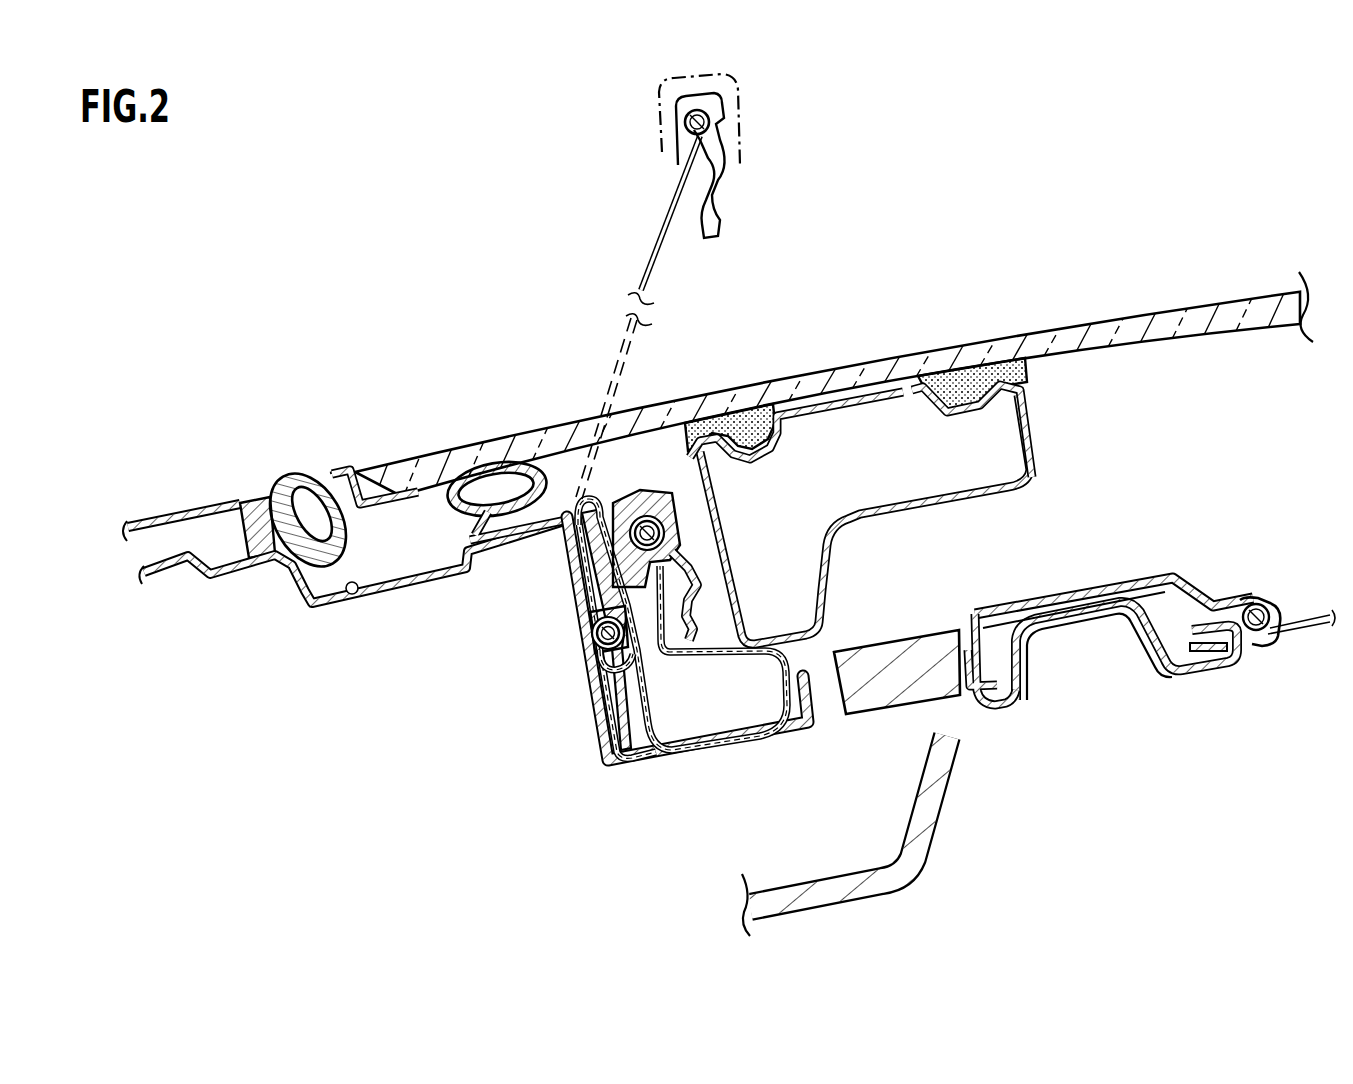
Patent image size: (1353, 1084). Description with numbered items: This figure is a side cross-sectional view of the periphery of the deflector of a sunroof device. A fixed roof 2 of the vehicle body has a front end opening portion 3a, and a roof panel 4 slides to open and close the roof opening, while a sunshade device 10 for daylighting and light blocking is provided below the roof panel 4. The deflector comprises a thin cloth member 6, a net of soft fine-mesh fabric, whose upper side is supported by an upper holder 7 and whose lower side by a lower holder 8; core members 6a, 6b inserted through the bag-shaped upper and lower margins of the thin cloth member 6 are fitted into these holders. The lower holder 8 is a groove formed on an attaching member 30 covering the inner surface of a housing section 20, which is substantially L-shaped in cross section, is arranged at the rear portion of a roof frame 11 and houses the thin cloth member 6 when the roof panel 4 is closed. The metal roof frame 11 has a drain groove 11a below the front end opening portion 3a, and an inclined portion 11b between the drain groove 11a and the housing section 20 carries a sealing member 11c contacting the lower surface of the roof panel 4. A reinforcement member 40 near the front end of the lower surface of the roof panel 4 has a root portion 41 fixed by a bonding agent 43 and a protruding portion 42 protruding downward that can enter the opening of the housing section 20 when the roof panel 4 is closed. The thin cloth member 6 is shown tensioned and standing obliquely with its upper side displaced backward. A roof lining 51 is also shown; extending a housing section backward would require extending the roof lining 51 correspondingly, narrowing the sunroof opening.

The fixed roof 2 is at (186, 520).
The front end opening portion 3a is at (354, 478).
The roof panel 4 is at (1143, 330).
The thin cloth member 6 is at (642, 708).
The core member 6a is at (627, 508).
The core member 6b is at (590, 636).
The upper holder 7 is at (653, 485).
The lower holder 8 is at (626, 672).
The sunshade device 10 is at (1198, 686).
The roof frame 11 is at (406, 598).
The drain groove 11a is at (352, 592).
The inclined portion 11b is at (518, 542).
The sealing member 11c is at (452, 470).
The housing section 20 is at (706, 762).
The attaching member 30 is at (612, 769).
The reinforcement member 40 is at (1038, 473).
The root portion 41 is at (1020, 438).
The protruding portion 42 is at (822, 588).
The bonding agent 43 is at (738, 414).
The roof lining 51 is at (942, 844).